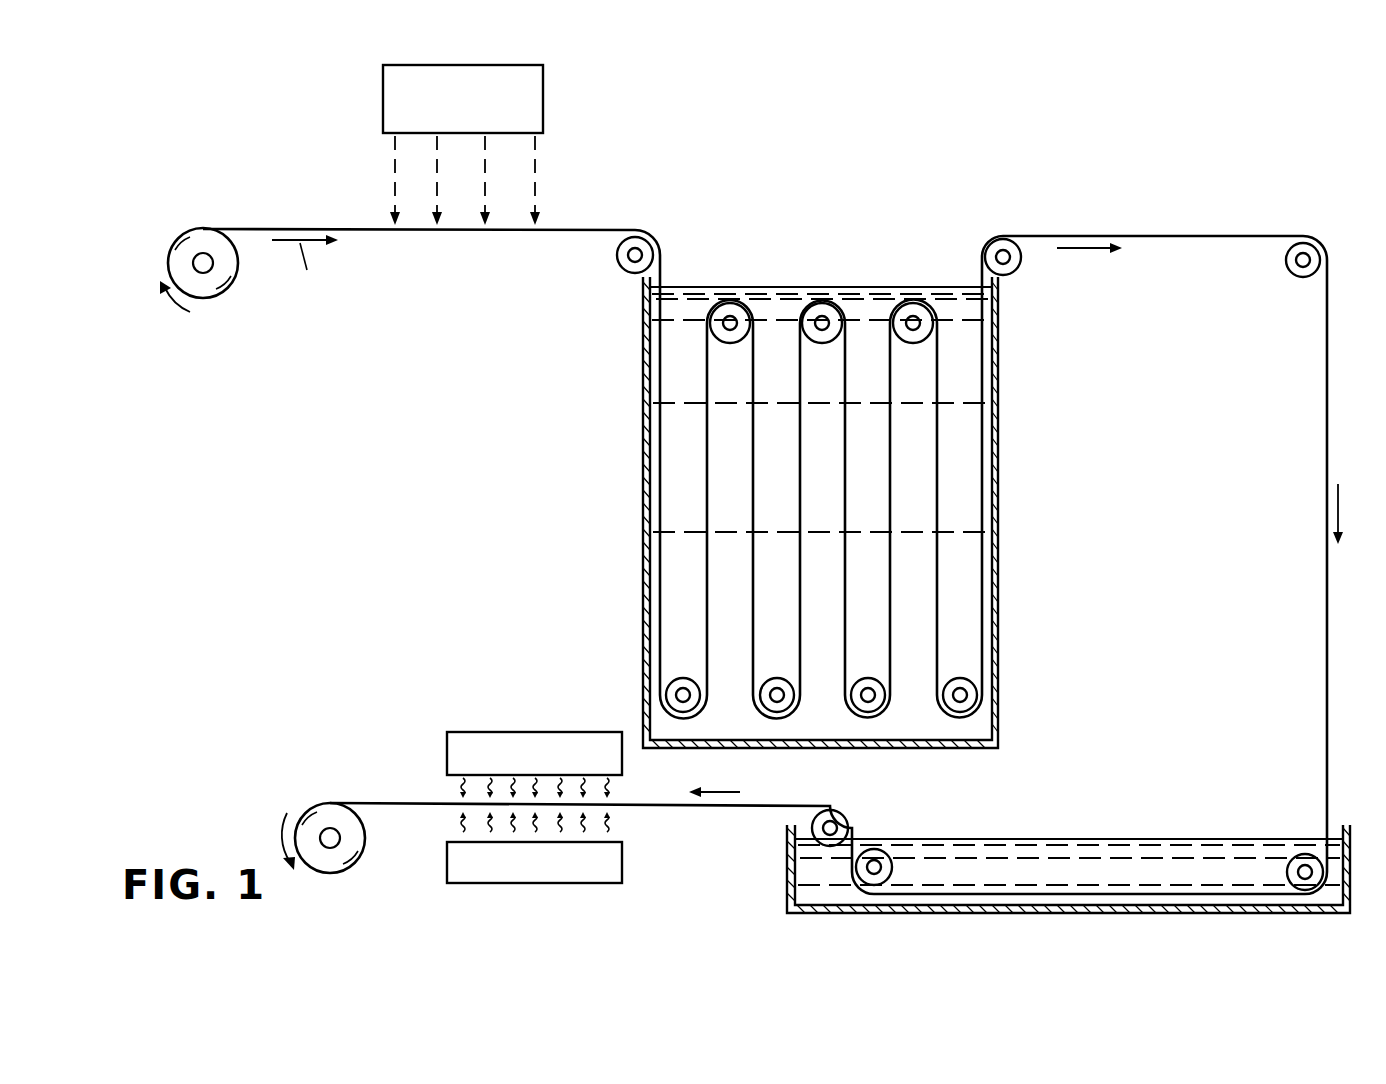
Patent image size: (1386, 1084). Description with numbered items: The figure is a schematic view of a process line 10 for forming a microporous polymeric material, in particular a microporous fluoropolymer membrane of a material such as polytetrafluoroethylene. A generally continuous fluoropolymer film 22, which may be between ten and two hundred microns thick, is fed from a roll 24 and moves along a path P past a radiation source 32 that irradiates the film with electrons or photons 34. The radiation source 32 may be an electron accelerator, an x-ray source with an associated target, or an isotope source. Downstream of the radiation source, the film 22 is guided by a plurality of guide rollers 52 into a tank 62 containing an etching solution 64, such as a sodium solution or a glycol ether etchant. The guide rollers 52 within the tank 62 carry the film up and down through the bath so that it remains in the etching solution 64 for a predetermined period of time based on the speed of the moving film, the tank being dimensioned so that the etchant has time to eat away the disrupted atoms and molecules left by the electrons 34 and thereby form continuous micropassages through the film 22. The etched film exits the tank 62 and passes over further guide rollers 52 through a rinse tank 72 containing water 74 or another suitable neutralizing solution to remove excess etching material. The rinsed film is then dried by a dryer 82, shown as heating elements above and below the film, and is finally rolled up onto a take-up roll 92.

The process line 10 is at (1054, 129).
The fluoropolymer film 22 is at (258, 228).
The roll 24 is at (208, 282).
The radiation source 32 is at (543, 102).
The electrons or photons 34 is at (487, 178).
The guide rollers 52 is at (623, 263).
The tank 62 is at (641, 432).
The etching solution 64 is at (872, 310).
The rinse tank 72 is at (787, 870).
The water 74 is at (1075, 850).
The dryer 82 is at (517, 732).
The take-up roll 92 is at (325, 817).